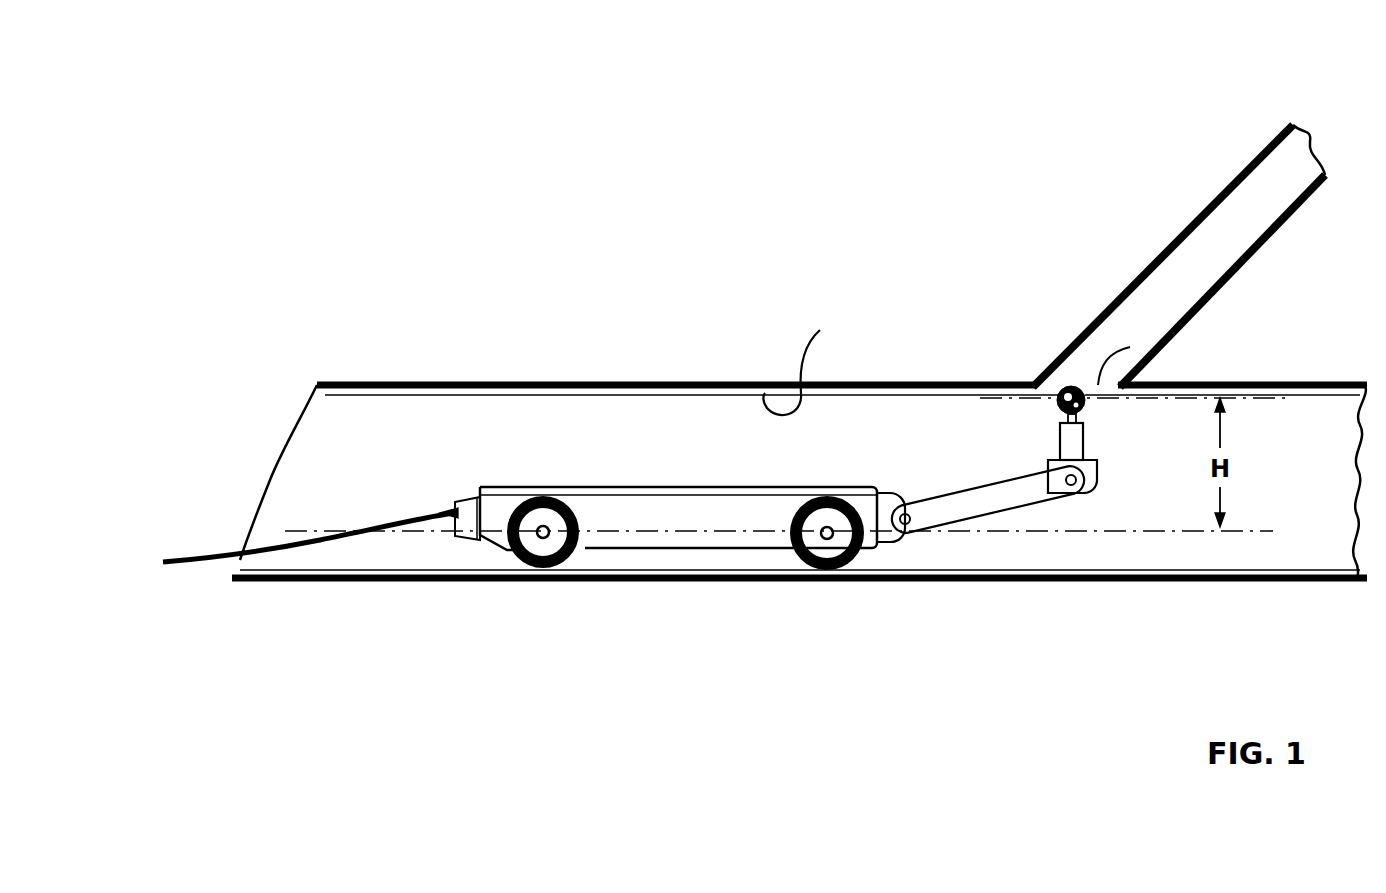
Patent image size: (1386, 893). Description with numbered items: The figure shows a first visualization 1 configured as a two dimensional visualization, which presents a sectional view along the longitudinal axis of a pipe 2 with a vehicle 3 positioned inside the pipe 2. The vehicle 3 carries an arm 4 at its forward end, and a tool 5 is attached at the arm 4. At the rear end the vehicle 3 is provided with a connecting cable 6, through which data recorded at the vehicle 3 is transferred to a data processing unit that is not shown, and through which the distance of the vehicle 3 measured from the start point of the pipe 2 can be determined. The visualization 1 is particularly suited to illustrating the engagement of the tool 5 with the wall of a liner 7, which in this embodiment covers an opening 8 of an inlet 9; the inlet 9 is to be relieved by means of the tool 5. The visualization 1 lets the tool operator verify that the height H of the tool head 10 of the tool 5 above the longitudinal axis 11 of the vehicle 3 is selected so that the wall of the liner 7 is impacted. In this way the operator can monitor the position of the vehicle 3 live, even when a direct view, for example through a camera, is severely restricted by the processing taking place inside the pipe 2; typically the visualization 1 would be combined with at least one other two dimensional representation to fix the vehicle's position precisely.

The visualization 1 is at (716, 291).
The pipe 2 is at (439, 450).
The vehicle 3 is at (604, 472).
The arm 4 is at (974, 535).
The tool 5 is at (1113, 447).
The connecting cable 6 is at (360, 535).
The liner 7 is at (804, 360).
The opening 8 is at (1130, 347).
The inlet 9 is at (1198, 260).
The tool head 10 is at (1072, 385).
The longitudinal axis 11 is at (663, 530).